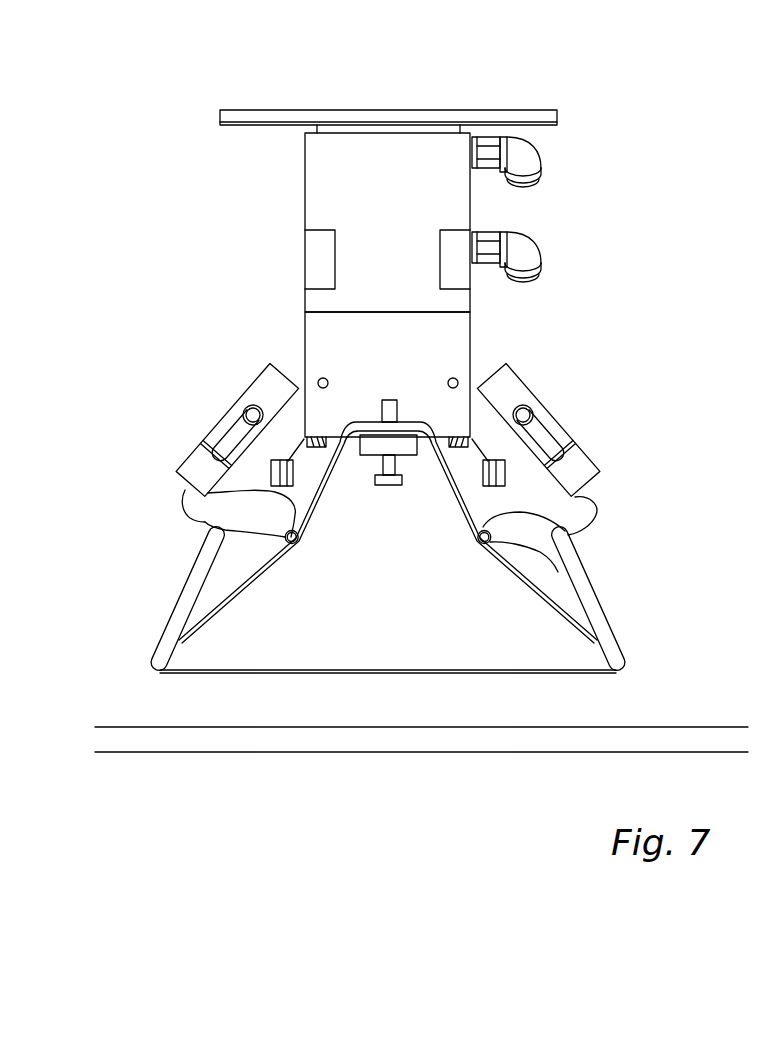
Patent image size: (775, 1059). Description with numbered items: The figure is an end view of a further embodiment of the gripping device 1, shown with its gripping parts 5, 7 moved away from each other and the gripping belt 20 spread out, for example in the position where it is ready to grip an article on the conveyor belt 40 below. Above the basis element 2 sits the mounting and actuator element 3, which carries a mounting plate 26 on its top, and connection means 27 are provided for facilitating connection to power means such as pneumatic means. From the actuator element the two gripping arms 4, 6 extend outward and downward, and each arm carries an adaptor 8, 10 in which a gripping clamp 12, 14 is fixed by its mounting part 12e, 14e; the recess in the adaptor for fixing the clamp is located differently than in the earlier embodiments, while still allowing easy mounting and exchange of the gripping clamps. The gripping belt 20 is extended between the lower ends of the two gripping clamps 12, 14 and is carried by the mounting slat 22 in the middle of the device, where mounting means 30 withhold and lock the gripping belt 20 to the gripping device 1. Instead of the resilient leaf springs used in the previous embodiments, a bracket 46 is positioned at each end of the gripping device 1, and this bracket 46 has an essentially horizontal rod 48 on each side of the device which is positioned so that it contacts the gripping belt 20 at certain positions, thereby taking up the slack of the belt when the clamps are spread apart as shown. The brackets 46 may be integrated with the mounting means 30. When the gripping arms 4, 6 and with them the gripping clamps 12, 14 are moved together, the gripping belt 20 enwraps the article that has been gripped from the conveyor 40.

The gripping device 1 is at (692, 268).
The basis element 2 is at (305, 331).
The mounting and actuator element 3 is at (305, 196).
The gripping arm 4 is at (303, 378).
The gripping part 5 is at (157, 473).
The gripping arm 6 is at (482, 394).
The gripping part 7 is at (680, 433).
The adaptor 8 is at (243, 412).
The adaptor 10 is at (540, 395).
The gripping clamp 12 is at (175, 607).
The mounting part of gripping clamp 12e is at (228, 428).
The gripping clamp 14 is at (609, 623).
The mounting part of gripping clamp 14e is at (573, 442).
The gripping belt 20 is at (512, 675).
The mounting slat 22 is at (372, 455).
The mounting plate 26 is at (383, 108).
The connection means 27 is at (540, 157).
The mounting means 30 is at (388, 398).
The conveyor belt 40 is at (333, 753).
The bracket 46 is at (190, 518).
The horizontal rod 48 is at (207, 557).